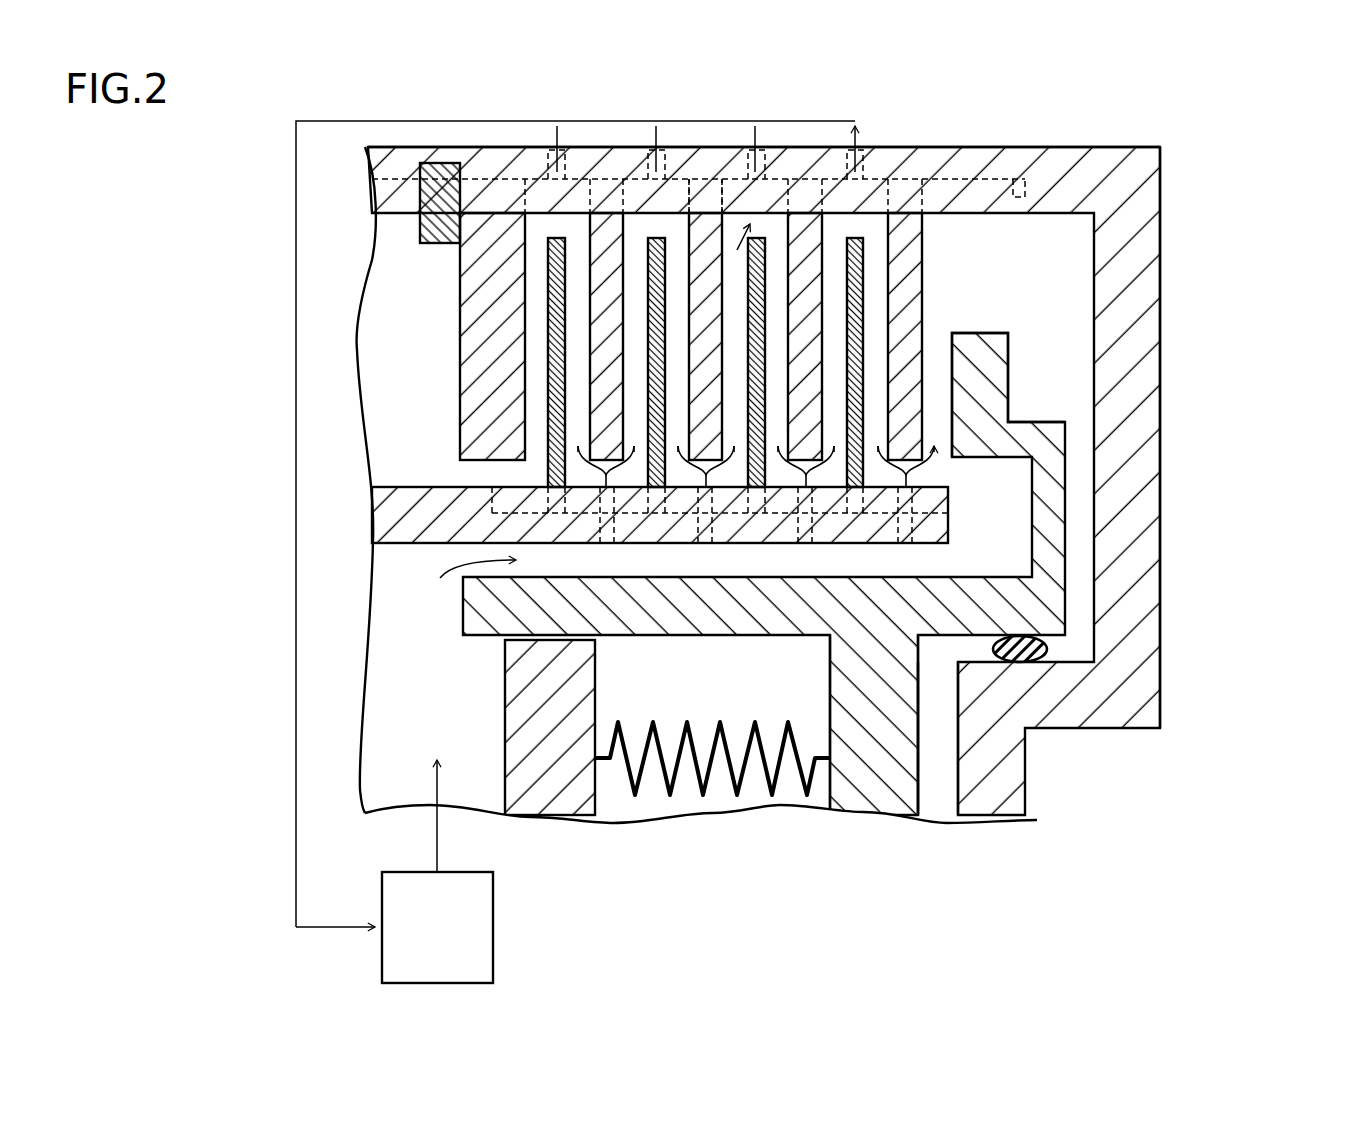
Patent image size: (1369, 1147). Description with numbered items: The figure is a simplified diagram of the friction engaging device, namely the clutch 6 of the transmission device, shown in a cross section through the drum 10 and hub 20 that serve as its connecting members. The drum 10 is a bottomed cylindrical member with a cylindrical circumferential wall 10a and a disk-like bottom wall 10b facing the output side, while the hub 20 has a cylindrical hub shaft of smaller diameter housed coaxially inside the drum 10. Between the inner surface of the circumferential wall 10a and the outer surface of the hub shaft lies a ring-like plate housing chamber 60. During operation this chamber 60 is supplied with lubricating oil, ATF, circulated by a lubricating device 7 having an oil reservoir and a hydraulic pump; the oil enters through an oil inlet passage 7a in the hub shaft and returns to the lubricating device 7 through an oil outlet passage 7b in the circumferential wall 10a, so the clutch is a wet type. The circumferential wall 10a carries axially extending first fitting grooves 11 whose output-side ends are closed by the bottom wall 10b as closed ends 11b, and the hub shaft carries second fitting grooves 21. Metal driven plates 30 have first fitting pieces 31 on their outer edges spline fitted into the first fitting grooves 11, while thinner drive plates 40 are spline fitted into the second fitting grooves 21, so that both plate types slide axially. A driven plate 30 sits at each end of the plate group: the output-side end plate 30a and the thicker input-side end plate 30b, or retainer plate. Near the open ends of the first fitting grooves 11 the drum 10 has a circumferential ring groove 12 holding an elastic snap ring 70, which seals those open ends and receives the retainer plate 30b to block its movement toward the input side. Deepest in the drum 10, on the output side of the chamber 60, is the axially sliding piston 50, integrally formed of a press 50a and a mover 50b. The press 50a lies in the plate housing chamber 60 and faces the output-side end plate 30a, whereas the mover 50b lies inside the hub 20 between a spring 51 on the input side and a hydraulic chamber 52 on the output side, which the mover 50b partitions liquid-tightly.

The clutch 6 is at (853, 440).
The lubricating device 7 is at (555, 526).
The oil inlet passage 7a is at (401, 610).
The oil outlet passage 7b is at (325, 121).
The drum 10 is at (848, 440).
The circumferential wall 10a is at (1098, 148).
The bottom wall 10b is at (1150, 448).
The first fitting groove 11 is at (984, 190).
The closed end 11b is at (1013, 178).
The ring groove 12 is at (450, 168).
The hub 20 is at (696, 473).
The second fitting groove 21 is at (915, 510).
The driven plate 30 is at (767, 264).
The output-side end plate 30a is at (905, 248).
The input-side end plate 30b is at (492, 237).
The first fitting piece 31 is at (703, 198).
The drive plate 40 is at (855, 240).
The piston 50 is at (776, 591).
The press 50a is at (990, 368).
The mover 50b is at (877, 785).
The spring 51 is at (720, 785).
The hydraulic chamber 52 is at (940, 790).
The plate housing chamber 60 is at (423, 325).
The snap ring 70 is at (420, 232).